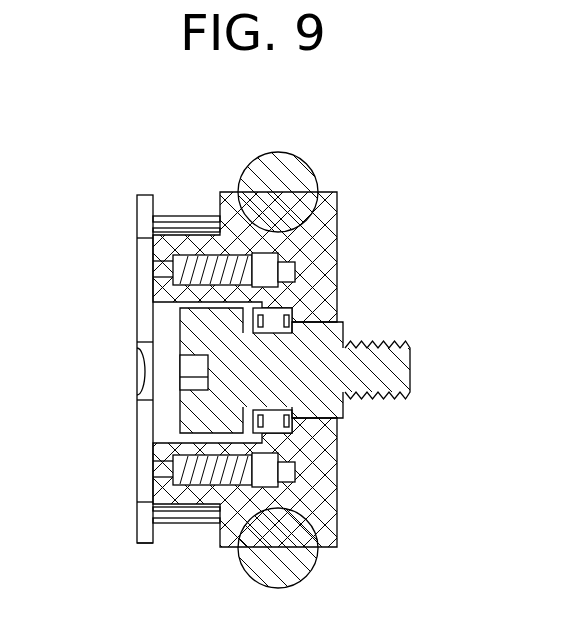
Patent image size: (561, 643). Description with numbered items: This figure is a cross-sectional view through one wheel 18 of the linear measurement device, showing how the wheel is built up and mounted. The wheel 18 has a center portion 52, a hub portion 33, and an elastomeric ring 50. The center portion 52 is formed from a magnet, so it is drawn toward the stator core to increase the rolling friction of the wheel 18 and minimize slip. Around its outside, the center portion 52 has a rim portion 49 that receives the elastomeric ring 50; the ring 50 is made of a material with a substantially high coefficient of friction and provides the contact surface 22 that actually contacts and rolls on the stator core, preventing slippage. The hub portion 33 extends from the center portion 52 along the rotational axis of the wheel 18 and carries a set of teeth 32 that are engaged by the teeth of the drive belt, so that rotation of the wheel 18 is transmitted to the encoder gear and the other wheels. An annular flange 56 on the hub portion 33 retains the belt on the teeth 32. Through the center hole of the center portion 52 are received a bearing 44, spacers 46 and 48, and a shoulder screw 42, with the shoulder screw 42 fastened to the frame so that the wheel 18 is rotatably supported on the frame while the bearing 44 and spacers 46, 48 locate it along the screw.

The wheel 18 is at (286, 214).
The contact surface 22 is at (260, 521).
The teeth 32 is at (168, 524).
The hub portion 33 is at (125, 549).
The shoulder screw 42 is at (411, 348).
The bearing 44 is at (290, 436).
The spacer 46 is at (346, 326).
The spacer 48 is at (220, 318).
The rim portion 49 is at (311, 567).
The elastomeric ring 50 is at (309, 166).
The center portion 52 is at (219, 196).
The annular flange 56 is at (137, 197).